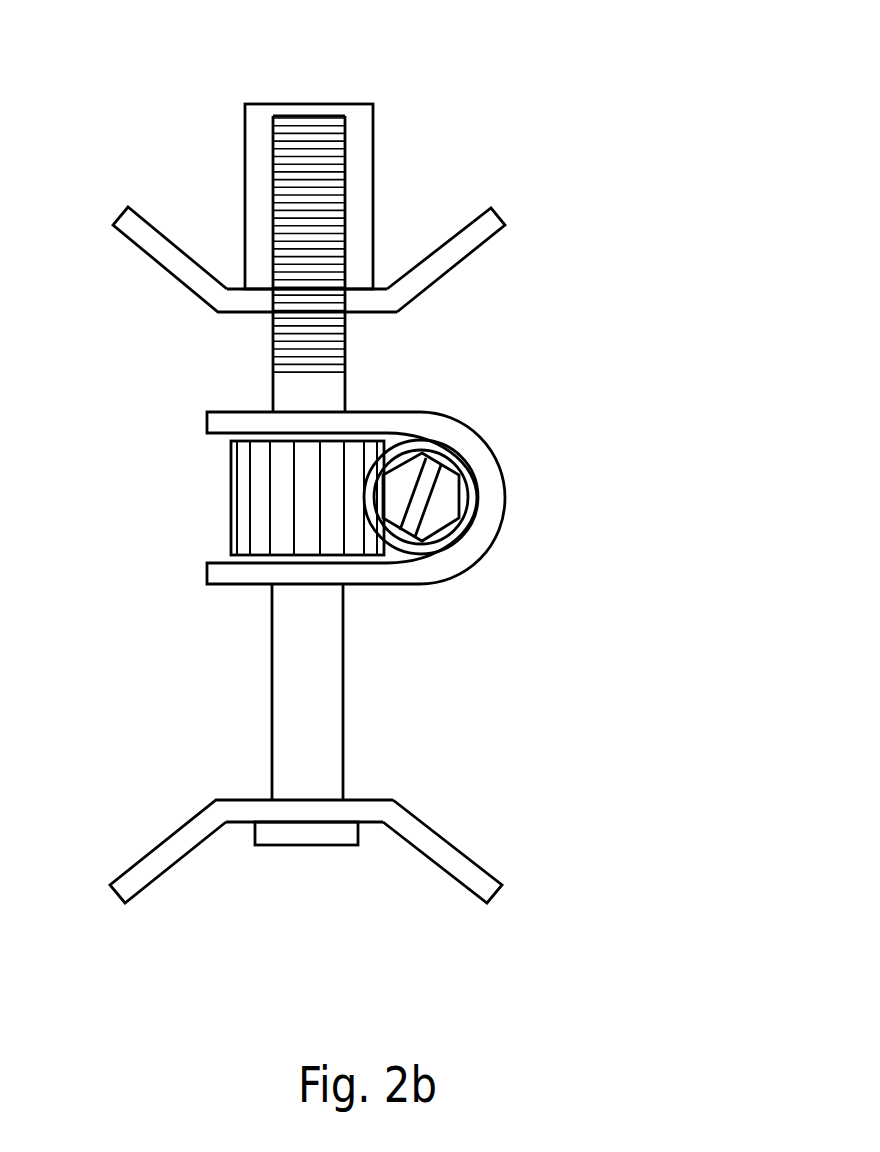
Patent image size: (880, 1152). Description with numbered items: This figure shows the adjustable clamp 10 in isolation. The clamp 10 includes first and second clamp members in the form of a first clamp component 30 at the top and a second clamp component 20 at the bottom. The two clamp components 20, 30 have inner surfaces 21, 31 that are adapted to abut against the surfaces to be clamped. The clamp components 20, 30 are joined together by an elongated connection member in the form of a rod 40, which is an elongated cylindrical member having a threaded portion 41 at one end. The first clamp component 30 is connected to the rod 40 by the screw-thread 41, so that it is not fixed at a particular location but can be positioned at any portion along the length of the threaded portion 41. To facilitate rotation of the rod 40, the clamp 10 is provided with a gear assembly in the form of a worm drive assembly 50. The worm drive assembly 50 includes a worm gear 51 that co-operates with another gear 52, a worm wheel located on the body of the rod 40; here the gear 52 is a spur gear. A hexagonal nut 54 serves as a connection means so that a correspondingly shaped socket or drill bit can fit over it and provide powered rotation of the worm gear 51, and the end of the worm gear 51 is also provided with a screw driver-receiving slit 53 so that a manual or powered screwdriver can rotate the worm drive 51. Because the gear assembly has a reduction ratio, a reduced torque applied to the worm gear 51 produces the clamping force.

The adjustable clamp 10 is at (371, 451).
The second clamp component 20 is at (356, 817).
The inner surface 21 is at (443, 838).
The first clamp component 30 is at (369, 257).
The inner surface 31 is at (463, 262).
The rod 40 is at (321, 400).
The threaded portion 41 is at (282, 152).
The worm drive assembly 50 is at (512, 540).
The worm gear 51 is at (527, 508).
The gear 52 is at (263, 513).
The screw driver-receiving slit 53 is at (428, 483).
The hexagonal nut 54 is at (438, 515).